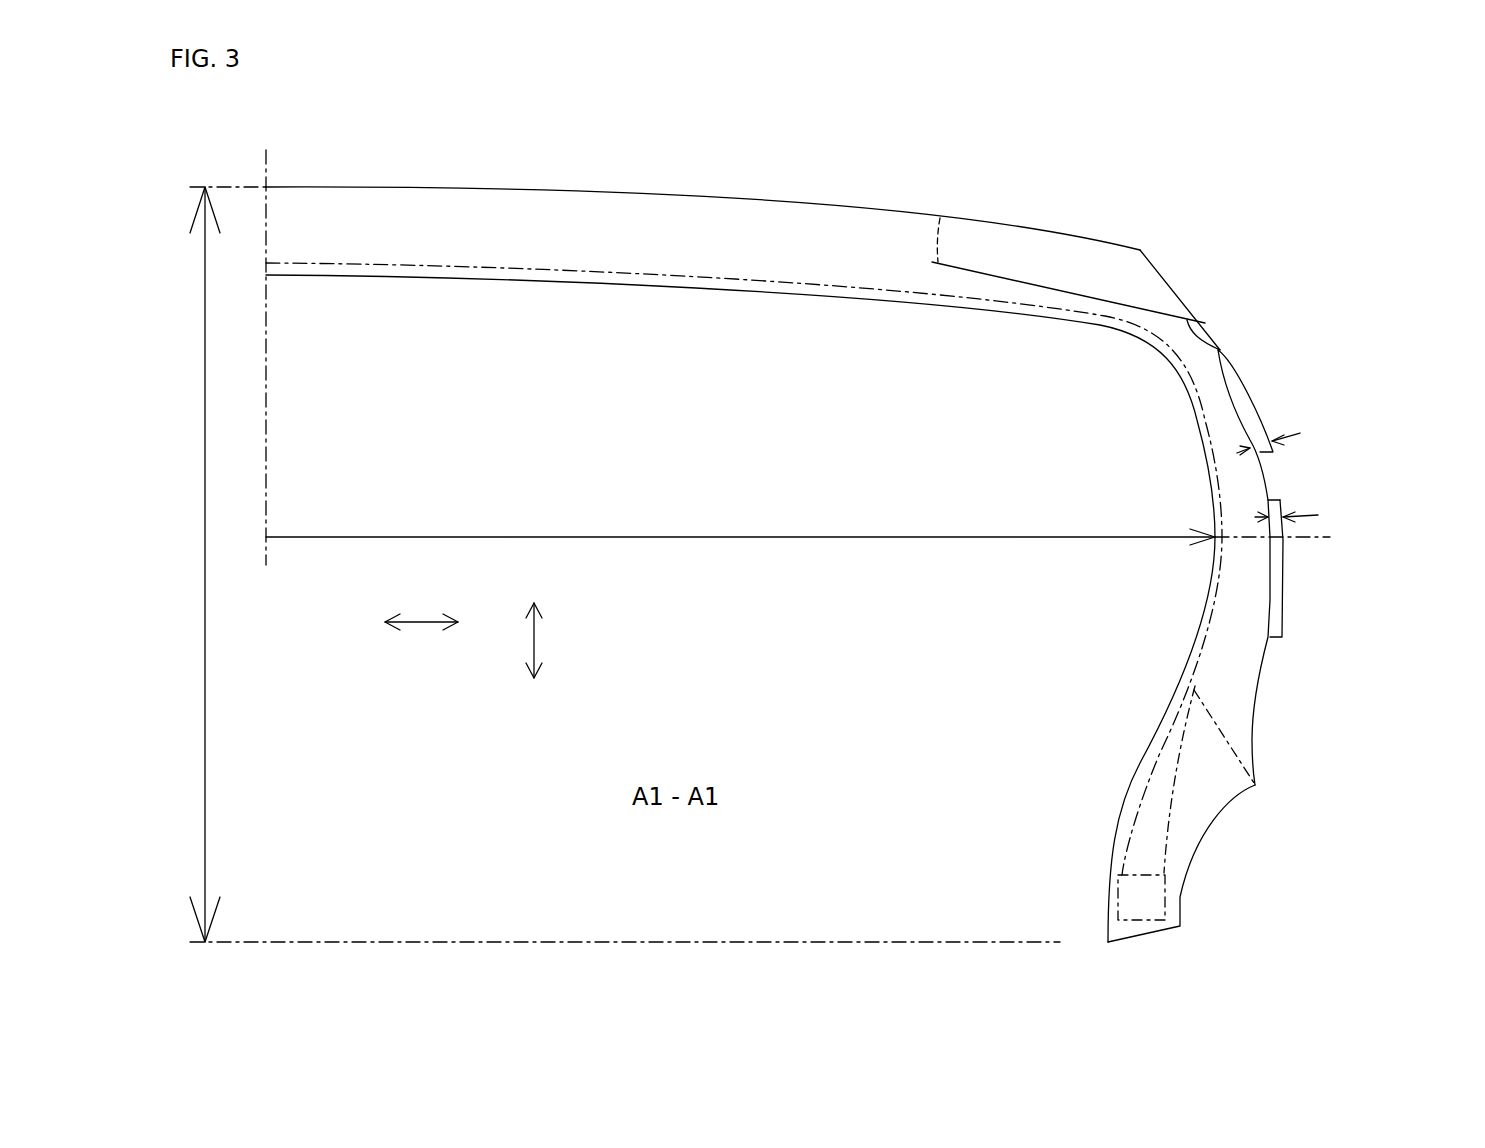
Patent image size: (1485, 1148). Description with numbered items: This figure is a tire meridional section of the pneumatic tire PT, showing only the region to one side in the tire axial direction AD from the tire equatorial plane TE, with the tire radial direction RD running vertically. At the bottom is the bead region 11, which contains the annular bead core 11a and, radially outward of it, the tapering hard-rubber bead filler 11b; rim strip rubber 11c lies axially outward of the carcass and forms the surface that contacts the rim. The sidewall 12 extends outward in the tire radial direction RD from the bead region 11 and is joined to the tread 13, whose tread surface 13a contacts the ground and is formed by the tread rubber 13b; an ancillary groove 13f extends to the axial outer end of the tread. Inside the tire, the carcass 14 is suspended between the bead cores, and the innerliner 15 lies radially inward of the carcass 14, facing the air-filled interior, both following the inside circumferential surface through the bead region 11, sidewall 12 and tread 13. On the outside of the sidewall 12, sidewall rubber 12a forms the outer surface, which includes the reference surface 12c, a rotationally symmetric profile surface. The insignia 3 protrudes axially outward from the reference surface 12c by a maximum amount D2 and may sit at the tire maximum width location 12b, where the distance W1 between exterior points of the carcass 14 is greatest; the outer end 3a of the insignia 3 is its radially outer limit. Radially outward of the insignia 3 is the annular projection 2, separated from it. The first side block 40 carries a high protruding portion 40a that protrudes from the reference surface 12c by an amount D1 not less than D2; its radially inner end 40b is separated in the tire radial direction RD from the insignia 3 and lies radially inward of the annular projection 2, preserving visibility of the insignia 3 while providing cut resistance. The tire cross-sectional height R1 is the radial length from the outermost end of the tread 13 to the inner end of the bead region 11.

The annular projection 2 is at (1218, 350).
The insignia 3 is at (1340, 560).
The outer end in the tire radial direction of insignia 3a is at (1280, 500).
The bead region 11 is at (1158, 826).
The bead core 11a is at (1123, 904).
The bead filler 11b is at (1127, 845).
The rim strip rubber 11c is at (1190, 838).
The sidewall 12 is at (1295, 569).
The sidewall rubber 12a is at (1253, 750).
The tire maximum width location 12b is at (1356, 540).
The reference surface 12c is at (1247, 430).
The tread 13 is at (743, 225).
The tread surface 13a is at (578, 190).
The tread rubber 13b is at (692, 212).
The ancillary groove 13f is at (1057, 272).
The carcass 14 is at (648, 270).
The innerliner 15 is at (562, 285).
The first side block 40 is at (1298, 375).
The high protruding portion 40a is at (1237, 385).
The inner end in the tire radial direction of high protruding portion 40b is at (1263, 455).
The amount by which high protruding portion protrudes D1 is at (1285, 437).
The maximum amount by which insignia protrudes D2 is at (1304, 515).
The distance between exterior points of carcass W1 is at (798, 550).
The tire cross-sectional height R1 is at (625, 564).
The pneumatic tire PT is at (219, 182).
The tire equatorial plane TE is at (264, 348).
The tire axial direction AD is at (421, 636).
The tire radial direction RD is at (553, 640).